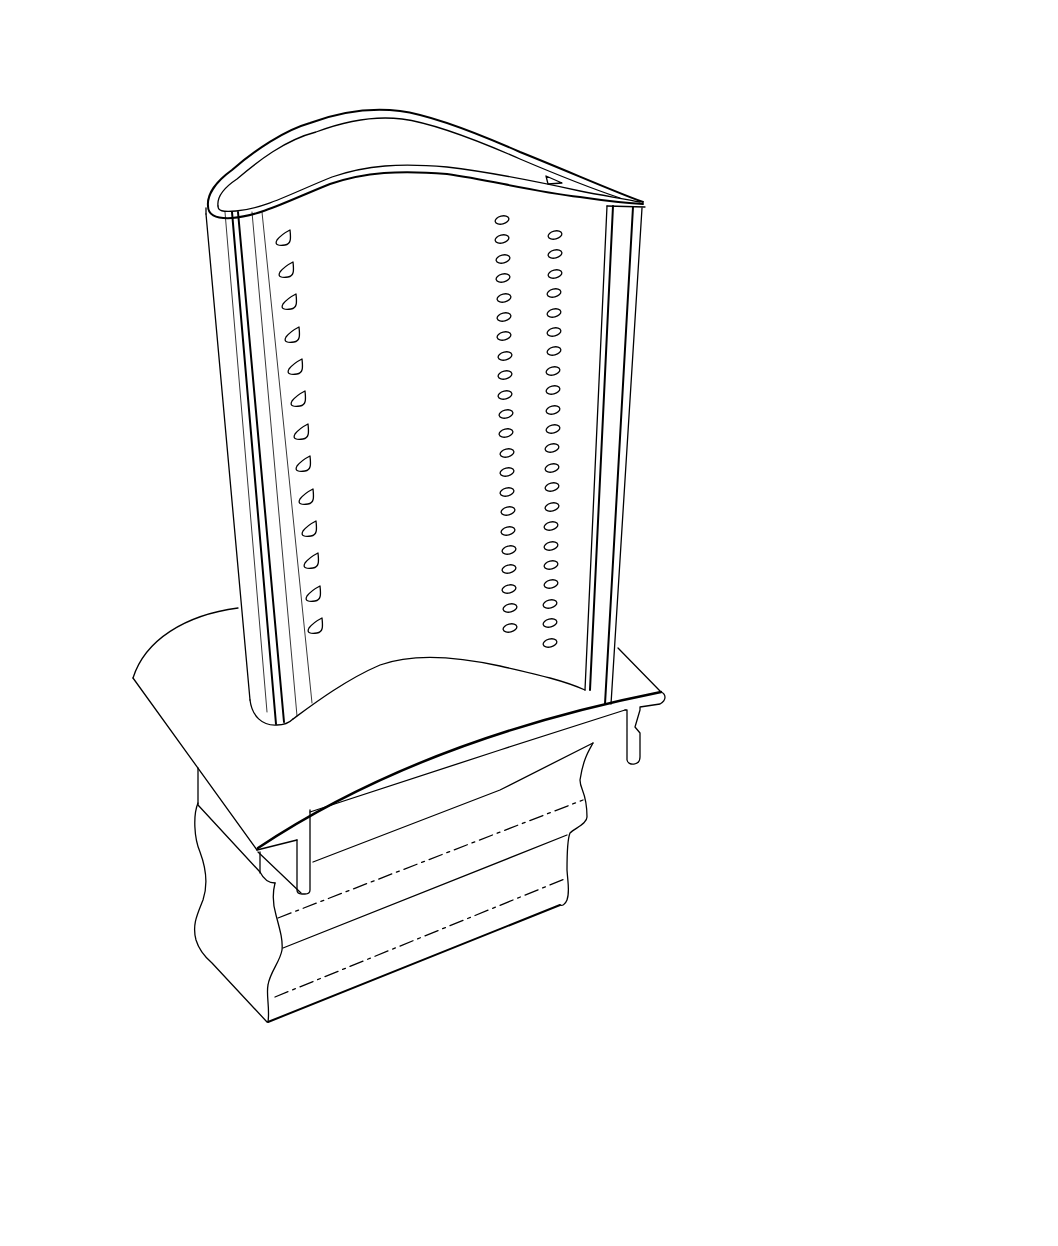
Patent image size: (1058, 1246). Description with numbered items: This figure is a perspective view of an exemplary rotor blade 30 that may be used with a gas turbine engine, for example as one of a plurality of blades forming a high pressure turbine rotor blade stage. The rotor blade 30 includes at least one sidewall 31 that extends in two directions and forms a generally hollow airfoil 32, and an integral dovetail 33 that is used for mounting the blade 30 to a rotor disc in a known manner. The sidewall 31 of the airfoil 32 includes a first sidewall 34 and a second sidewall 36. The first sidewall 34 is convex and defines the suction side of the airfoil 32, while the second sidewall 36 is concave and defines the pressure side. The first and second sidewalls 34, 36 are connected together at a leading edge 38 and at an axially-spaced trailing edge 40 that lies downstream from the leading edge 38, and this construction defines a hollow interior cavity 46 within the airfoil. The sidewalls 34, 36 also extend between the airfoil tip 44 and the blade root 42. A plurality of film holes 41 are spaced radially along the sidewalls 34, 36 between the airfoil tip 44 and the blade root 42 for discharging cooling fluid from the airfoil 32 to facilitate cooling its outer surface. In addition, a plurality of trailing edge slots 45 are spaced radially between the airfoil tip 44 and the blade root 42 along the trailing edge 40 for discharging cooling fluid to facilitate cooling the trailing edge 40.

The rotor blade 30 is at (700, 360).
The sidewall 31 is at (501, 87).
The airfoil 32 is at (230, 420).
The dovetail 33 is at (215, 882).
The first sidewall 34 is at (636, 428).
The second sidewall 36 is at (420, 229).
The leading edge 38 is at (197, 225).
The trailing edge 40 is at (641, 210).
The film holes 41 is at (313, 421).
The blade root 42 is at (176, 738).
The airfoil tip 44 is at (308, 153).
The trailing edge slots 45 is at (483, 433).
The hollow interior cavity 46 is at (510, 165).